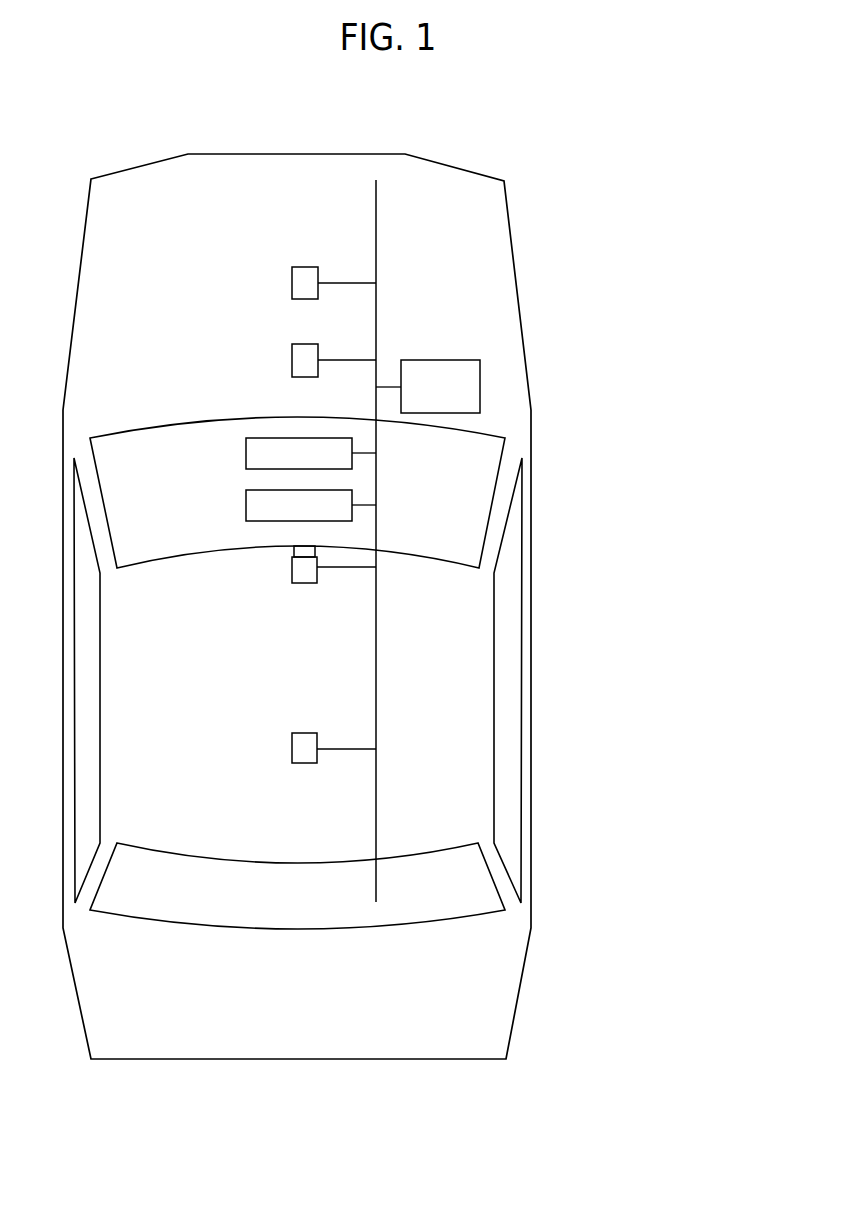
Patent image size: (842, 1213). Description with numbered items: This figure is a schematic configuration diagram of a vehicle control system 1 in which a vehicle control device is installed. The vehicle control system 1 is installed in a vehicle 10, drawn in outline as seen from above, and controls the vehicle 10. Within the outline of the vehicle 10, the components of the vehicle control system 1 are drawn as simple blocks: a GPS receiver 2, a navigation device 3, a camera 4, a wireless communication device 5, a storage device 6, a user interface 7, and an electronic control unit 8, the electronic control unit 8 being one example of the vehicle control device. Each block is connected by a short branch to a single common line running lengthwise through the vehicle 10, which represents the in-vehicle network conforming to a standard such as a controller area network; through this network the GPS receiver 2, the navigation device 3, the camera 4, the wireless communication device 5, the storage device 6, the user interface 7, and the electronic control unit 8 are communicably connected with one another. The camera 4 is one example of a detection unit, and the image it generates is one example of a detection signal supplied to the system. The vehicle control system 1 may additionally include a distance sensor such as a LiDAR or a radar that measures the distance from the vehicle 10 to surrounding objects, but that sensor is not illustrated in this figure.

The vehicle control system 1 is at (413, 616).
The vehicle 10 is at (531, 910).
The GPS receiver 2 is at (298, 767).
The navigation device 3 is at (246, 505).
The camera 4 is at (298, 588).
The wireless communication device 5 is at (292, 291).
The storage device 6 is at (292, 367).
The user interface 7 is at (246, 457).
The electronic control unit 8 is at (480, 395).